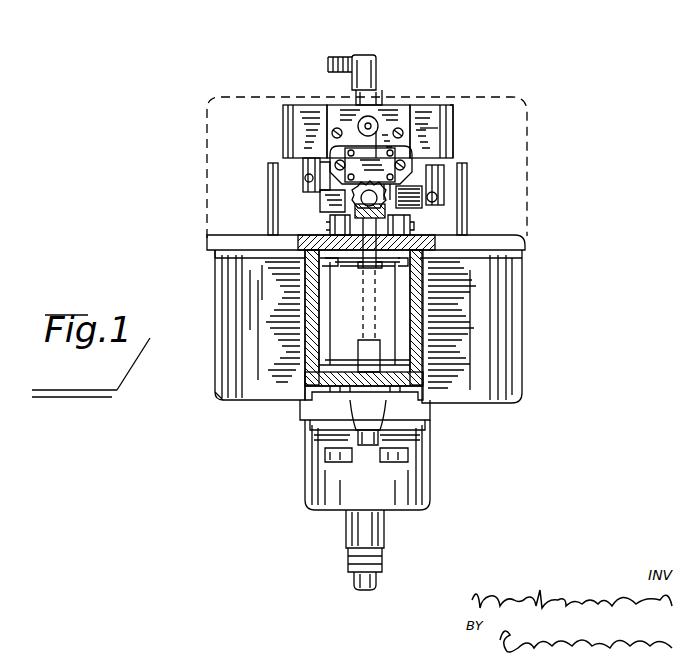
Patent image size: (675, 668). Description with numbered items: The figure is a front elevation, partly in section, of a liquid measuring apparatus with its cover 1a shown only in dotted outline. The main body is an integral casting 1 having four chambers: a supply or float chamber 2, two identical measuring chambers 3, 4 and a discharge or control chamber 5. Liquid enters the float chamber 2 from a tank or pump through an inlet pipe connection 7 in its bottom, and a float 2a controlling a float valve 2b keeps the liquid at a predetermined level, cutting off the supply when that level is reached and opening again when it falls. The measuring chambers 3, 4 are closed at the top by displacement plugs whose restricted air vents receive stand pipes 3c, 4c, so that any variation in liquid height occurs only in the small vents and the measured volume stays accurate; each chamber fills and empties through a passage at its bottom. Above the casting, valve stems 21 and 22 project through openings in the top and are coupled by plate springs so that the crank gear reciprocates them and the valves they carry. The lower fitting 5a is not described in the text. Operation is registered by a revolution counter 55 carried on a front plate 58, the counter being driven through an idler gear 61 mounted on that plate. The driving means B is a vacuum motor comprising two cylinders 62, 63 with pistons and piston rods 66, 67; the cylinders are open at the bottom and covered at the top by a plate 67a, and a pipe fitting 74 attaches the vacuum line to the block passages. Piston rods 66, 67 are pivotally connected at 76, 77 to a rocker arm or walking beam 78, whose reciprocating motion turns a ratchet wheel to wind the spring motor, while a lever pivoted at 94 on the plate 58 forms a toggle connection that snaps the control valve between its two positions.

The casting 1 is at (508, 245).
The cover 1a is at (513, 130).
The supply or float chamber 2 is at (438, 296).
The float 2a is at (388, 335).
The float valve 2b is at (332, 388).
The measuring chamber 3 is at (272, 388).
The stand pipe 3c is at (270, 185).
The measuring chamber 4 is at (478, 372).
The stand pipe 4c is at (466, 185).
The discharge or control chamber 5 is at (398, 503).
The outlet fitting 5a is at (373, 582).
The inlet pipe connection 7 is at (367, 408).
The valve stem 21 is at (335, 235).
The valve stem 22 is at (405, 236).
The revolution counter 55 is at (386, 130).
The front plate 58 is at (398, 112).
The idler gear 61 is at (428, 183).
The cylinder 62 is at (290, 120).
The cylinder 63 is at (457, 127).
The piston rod 66 is at (312, 172).
The piston rod 67 is at (412, 176).
The plate 67a is at (450, 122).
The pipe fitting 74 is at (368, 62).
The pivotal connection 76 is at (310, 182).
The pivotal connection 77 is at (436, 200).
The rocker arm or walking beam 78 is at (330, 193).
The pivot 94 is at (362, 122).
The driving means B is at (430, 130).